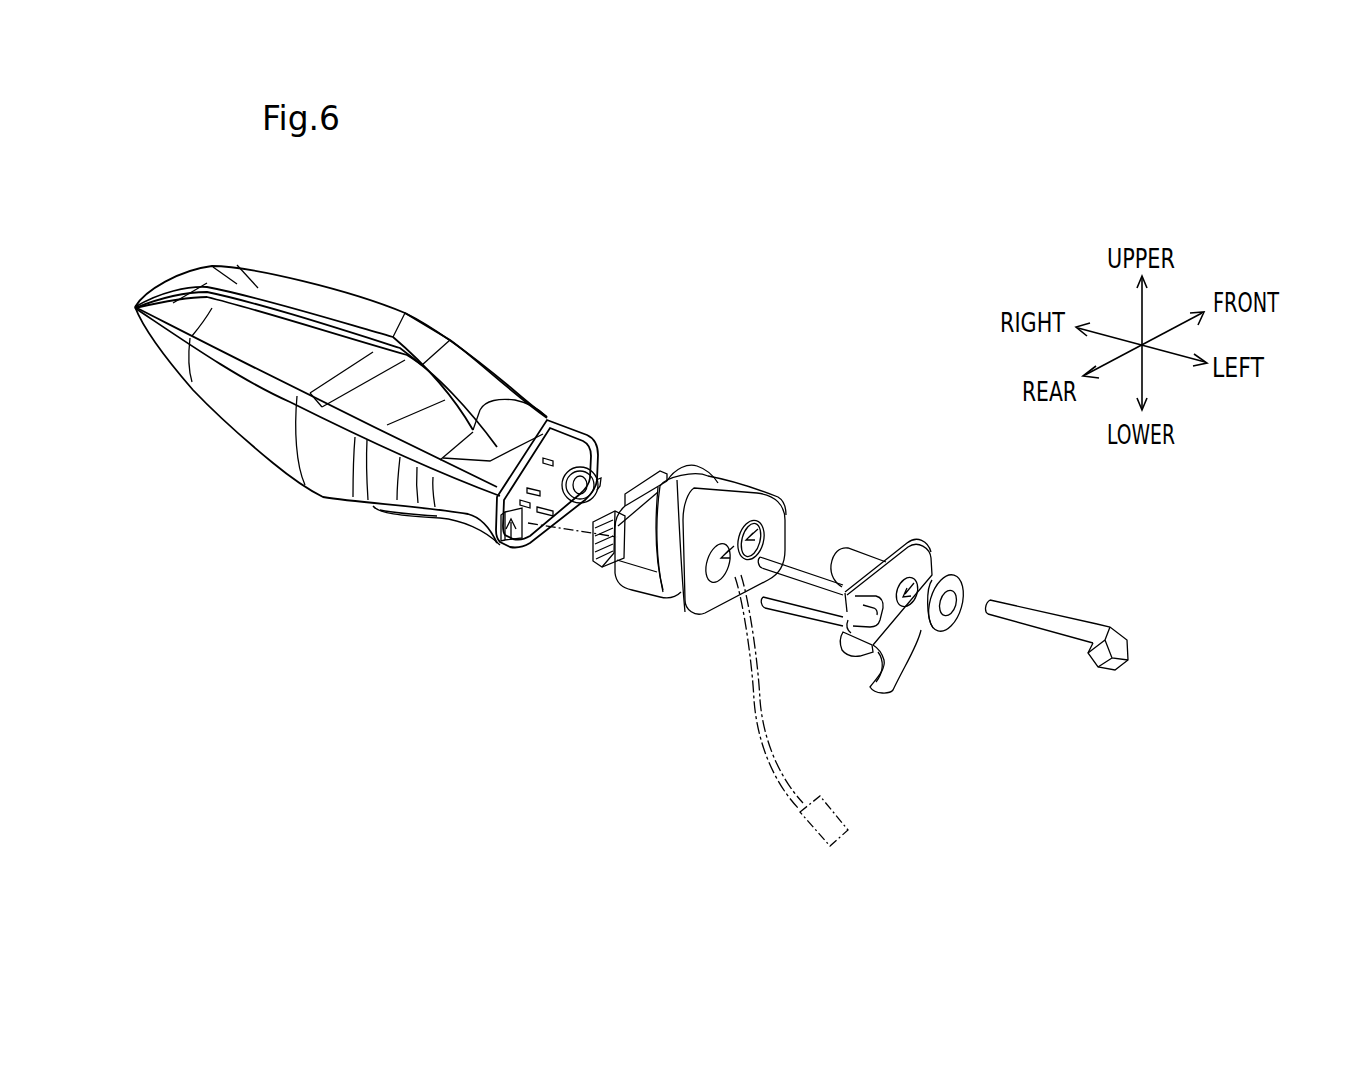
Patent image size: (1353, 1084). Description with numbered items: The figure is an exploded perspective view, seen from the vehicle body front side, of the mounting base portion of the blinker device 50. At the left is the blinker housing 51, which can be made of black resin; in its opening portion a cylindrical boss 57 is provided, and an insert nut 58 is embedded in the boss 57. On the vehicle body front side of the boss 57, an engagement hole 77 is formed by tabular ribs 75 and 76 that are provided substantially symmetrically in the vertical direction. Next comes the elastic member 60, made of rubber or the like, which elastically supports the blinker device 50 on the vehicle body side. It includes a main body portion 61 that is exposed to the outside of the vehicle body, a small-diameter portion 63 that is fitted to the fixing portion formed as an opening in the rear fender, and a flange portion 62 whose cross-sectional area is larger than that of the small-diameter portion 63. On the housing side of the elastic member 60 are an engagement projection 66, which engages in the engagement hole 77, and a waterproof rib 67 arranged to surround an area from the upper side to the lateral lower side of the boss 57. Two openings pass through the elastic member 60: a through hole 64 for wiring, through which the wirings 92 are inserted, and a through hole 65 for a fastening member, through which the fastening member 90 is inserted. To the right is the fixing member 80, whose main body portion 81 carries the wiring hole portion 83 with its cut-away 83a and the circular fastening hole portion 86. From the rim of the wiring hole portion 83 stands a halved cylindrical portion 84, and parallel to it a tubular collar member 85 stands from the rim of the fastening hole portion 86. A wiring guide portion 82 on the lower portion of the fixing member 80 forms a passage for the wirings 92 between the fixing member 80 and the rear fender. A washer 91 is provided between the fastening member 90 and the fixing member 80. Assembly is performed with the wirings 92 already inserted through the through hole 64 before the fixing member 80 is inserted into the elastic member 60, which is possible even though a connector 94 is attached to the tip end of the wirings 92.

The blinker device 50 is at (677, 352).
The blinker housing 51 is at (240, 403).
The cylindrical boss 57 is at (567, 462).
The insert nut 58 is at (599, 478).
The elastic member 60 is at (698, 458).
The main body portion 61 is at (668, 470).
The flange portion 62 is at (712, 606).
The small-diameter portion 63 is at (738, 486).
The through hole for wiring 64 is at (752, 518).
The through hole for a fastening member 65 is at (783, 528).
The engagement projection 66 is at (606, 572).
The waterproof rib 67 is at (645, 466).
The tabular rib 75 is at (548, 456).
The tabular rib 76 is at (528, 528).
The engagement hole 77 is at (511, 544).
The fixing member 80 is at (930, 540).
The main body portion 81 is at (860, 650).
The wiring guide portion 82 is at (905, 668).
The wiring hole portion 83 is at (872, 612).
The cut-away 83a is at (853, 626).
The halved cylindrical portion 84 is at (808, 598).
The tubular collar member 85 is at (855, 557).
The fastening hole portion 86 is at (920, 582).
The fastening member 90 is at (1045, 627).
The washer 91 is at (962, 593).
The wirings 92 is at (760, 751).
The connector 94 is at (806, 832).